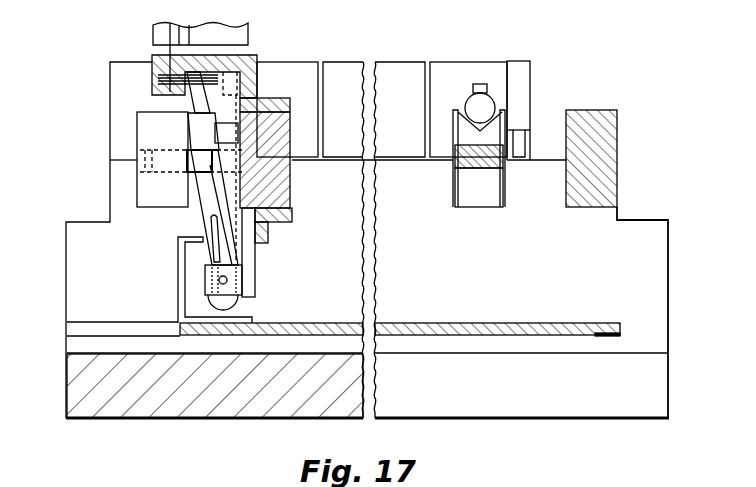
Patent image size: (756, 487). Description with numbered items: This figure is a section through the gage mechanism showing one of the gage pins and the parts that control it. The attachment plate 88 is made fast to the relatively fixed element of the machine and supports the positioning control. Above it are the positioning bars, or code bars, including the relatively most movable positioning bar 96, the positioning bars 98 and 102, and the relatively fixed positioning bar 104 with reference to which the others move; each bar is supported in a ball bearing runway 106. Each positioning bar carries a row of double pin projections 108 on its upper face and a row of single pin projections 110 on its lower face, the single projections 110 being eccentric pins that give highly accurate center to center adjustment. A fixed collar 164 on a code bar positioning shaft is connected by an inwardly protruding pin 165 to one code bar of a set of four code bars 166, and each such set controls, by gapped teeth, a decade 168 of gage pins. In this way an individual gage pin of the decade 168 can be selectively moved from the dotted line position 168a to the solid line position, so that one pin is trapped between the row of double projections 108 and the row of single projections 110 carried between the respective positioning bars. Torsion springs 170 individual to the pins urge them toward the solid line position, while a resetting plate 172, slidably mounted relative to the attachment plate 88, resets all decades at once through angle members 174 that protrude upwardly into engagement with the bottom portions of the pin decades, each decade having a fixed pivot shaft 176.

The plate 88 is at (72, 394).
The positioning bar 96 is at (148, 125).
The positioning bar 98 is at (290, 115).
The positioning bar 102 is at (494, 170).
The positioning bar 104 is at (596, 110).
The ball bearing runway 106 is at (487, 91).
The double pin projections 108 is at (228, 147).
The single pin projections 110 is at (196, 197).
The fixed collar 164 is at (155, 37).
The inwardly protruding pin 165 is at (185, 47).
The code bars 166 is at (155, 90).
The decade of gage pins 168 is at (214, 223).
The dotted line position 168a is at (257, 57).
The torsion springs 170 is at (243, 259).
The resetting plate 172 is at (482, 322).
The angle members 174 is at (178, 285).
The fixed pivot shaft 176 is at (237, 288).